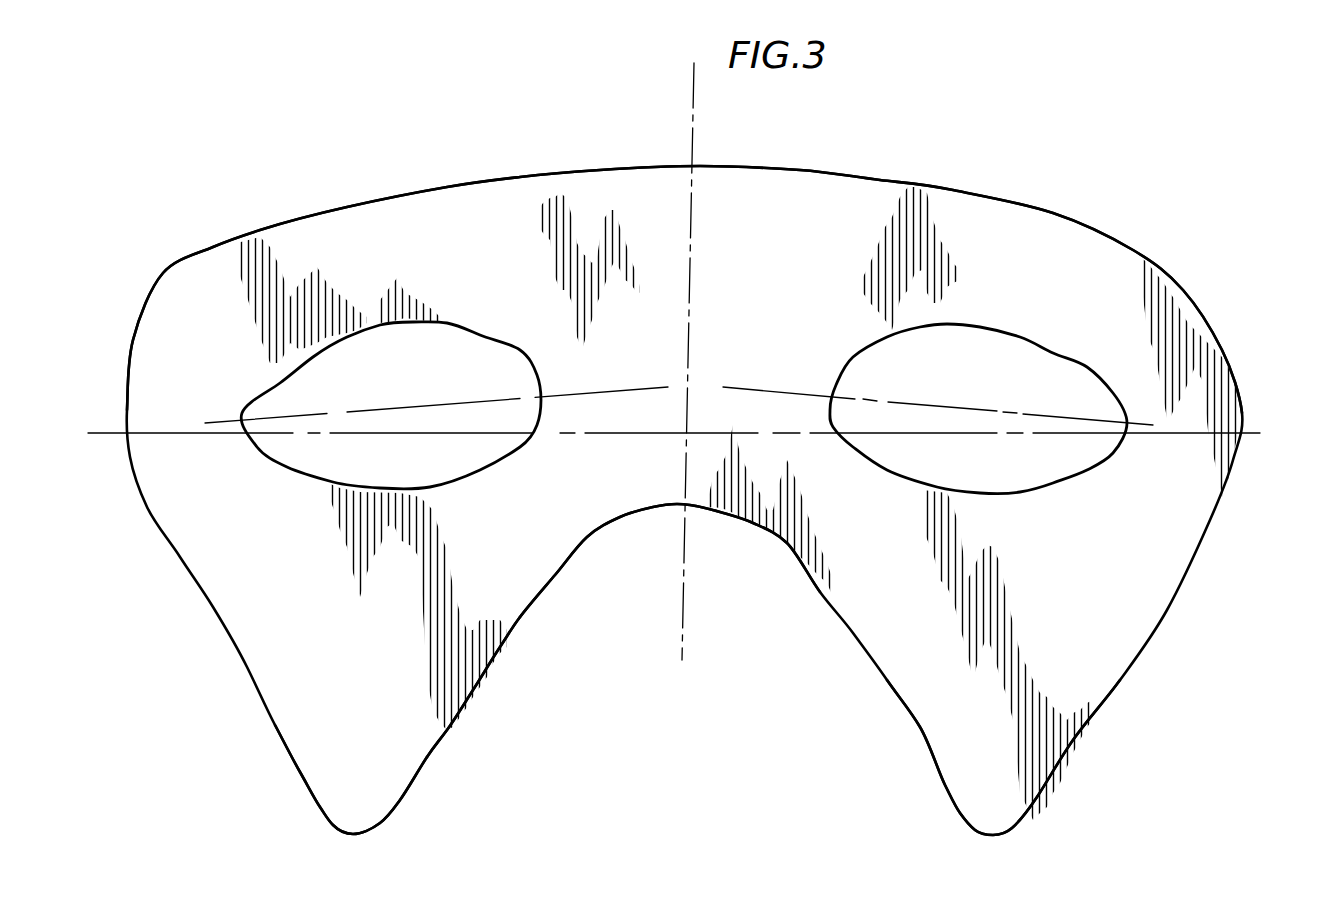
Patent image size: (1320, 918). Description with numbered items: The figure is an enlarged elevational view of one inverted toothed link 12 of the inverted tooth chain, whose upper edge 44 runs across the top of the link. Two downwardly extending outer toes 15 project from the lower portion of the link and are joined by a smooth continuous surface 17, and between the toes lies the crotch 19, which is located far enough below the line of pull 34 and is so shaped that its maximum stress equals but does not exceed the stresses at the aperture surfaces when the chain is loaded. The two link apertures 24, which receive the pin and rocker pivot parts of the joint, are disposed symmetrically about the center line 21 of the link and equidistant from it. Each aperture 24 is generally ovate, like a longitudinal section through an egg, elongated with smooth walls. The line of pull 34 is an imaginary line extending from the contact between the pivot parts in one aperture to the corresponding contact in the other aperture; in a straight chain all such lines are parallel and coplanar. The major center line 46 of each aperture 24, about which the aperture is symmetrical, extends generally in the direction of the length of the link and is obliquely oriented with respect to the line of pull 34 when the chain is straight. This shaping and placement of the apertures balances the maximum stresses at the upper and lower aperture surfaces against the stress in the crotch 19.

The inverted toothed link 12 is at (943, 192).
The outer toes 15 is at (414, 769).
The smooth continuous surface 17 is at (497, 654).
The crotch 19 is at (665, 508).
The center line 21 is at (692, 92).
The link aperture 24 is at (490, 347).
The line of pull 34 is at (624, 446).
The upper edge 44 is at (772, 170).
The center line of the aperture 46 is at (588, 393).